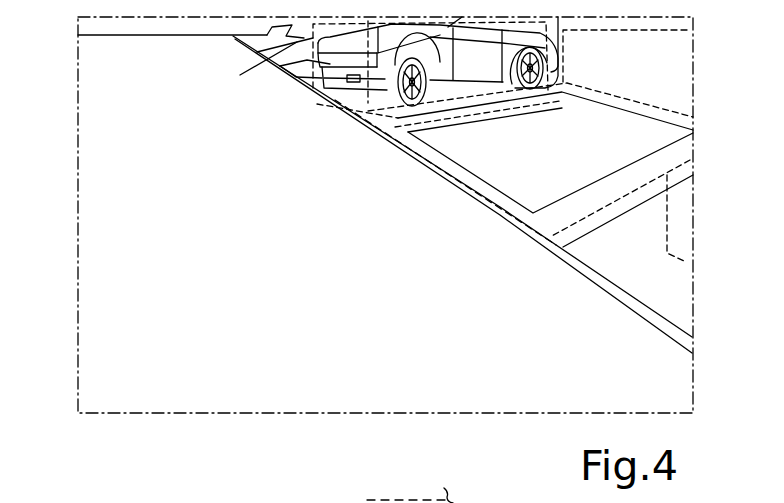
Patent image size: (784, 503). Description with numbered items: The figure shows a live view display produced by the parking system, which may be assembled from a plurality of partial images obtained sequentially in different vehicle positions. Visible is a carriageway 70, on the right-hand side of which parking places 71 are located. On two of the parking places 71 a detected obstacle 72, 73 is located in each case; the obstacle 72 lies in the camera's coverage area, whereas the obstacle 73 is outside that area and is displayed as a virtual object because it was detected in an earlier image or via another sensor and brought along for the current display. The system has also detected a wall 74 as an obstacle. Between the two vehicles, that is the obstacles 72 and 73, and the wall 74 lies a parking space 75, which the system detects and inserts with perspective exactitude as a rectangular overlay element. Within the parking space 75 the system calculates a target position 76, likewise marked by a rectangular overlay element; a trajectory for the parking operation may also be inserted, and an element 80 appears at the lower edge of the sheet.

The carriageway 70 is at (107, 135).
The parking places 71 is at (303, 55).
The detected obstacle 72 is at (314, 92).
The detected obstacle 73 is at (680, 223).
The wall 74 is at (662, 65).
The parking space 75 is at (383, 141).
The target position 76 is at (457, 193).
The bottom dashed element 80 is at (412, 479).